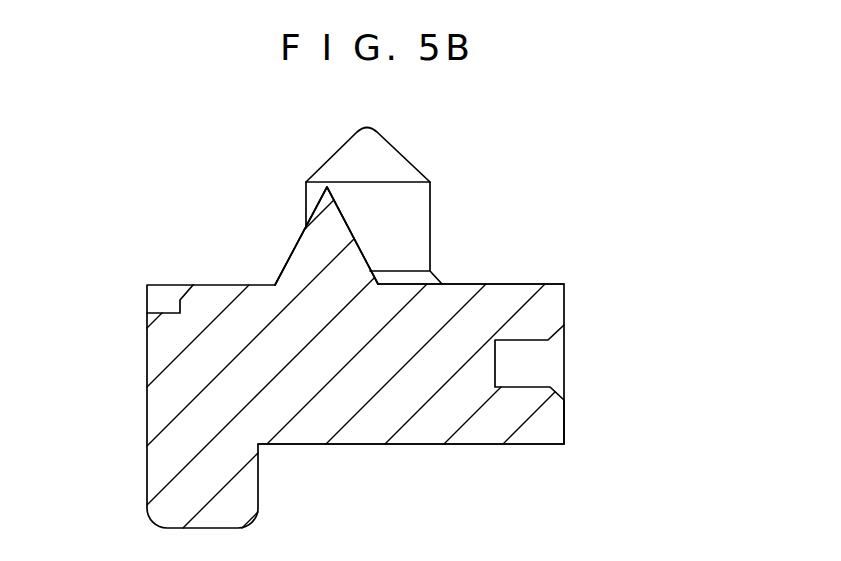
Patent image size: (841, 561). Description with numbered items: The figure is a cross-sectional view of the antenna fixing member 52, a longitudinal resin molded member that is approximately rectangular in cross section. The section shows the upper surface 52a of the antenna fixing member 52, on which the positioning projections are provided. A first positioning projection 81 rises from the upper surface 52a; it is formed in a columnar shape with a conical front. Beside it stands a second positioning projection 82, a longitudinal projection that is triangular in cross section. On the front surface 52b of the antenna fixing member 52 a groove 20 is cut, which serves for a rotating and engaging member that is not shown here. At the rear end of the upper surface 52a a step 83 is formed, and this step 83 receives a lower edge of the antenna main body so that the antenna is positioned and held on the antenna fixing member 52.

The antenna fixing member 52 is at (633, 395).
The upper surface 52a is at (523, 284).
The front surface 52b is at (565, 423).
The groove 20 is at (530, 340).
The first positioning projection 81 is at (430, 200).
The second positioning projection 82 is at (308, 260).
The step 83 is at (172, 313).